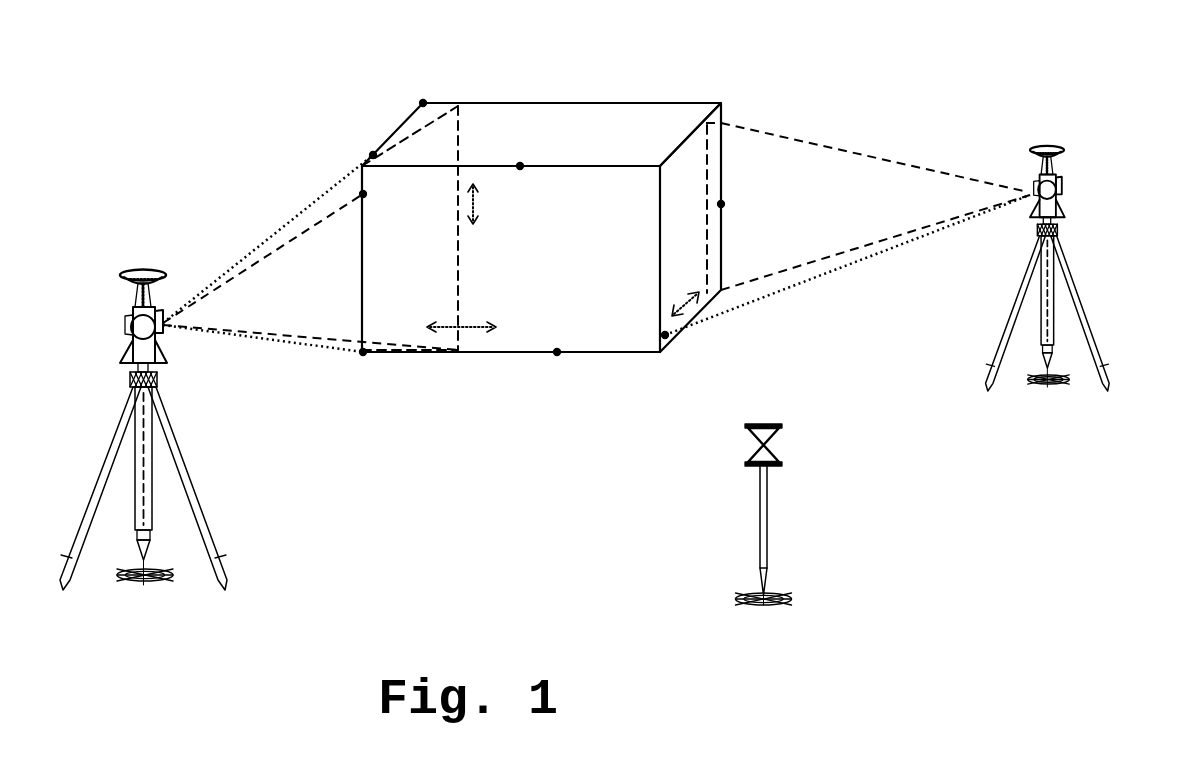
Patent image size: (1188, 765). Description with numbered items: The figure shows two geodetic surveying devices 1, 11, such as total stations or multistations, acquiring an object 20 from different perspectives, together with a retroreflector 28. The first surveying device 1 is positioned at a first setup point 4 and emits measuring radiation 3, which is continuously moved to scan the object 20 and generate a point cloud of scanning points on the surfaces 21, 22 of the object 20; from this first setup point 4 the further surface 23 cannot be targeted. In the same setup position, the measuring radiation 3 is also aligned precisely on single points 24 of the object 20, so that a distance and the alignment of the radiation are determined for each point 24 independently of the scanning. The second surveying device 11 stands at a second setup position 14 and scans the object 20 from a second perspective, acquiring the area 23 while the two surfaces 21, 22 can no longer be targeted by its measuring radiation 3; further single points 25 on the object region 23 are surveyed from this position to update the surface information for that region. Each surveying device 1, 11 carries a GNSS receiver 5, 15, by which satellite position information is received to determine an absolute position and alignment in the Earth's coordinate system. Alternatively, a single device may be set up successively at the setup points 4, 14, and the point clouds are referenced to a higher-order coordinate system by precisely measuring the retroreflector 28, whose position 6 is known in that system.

The first geodetic surveying device 1 is at (91, 290).
The measuring radiation 3 is at (283, 235).
The first setup point 4 is at (142, 584).
The GNSS receiver 5 is at (140, 270).
The position of the retroreflector 6 is at (762, 604).
The second geodetic surveying device 11 is at (1093, 137).
The second setup position 14 is at (1047, 392).
The GNSS receiver 15 is at (1040, 145).
The object 20 is at (496, 79).
The object surface 21 is at (613, 341).
The object surface 22 is at (578, 141).
The further surface of the object 23 is at (665, 191).
The single points of the object 24 is at (423, 103).
The further single points 25 is at (721, 204).
The retroreflector 28 is at (768, 433).